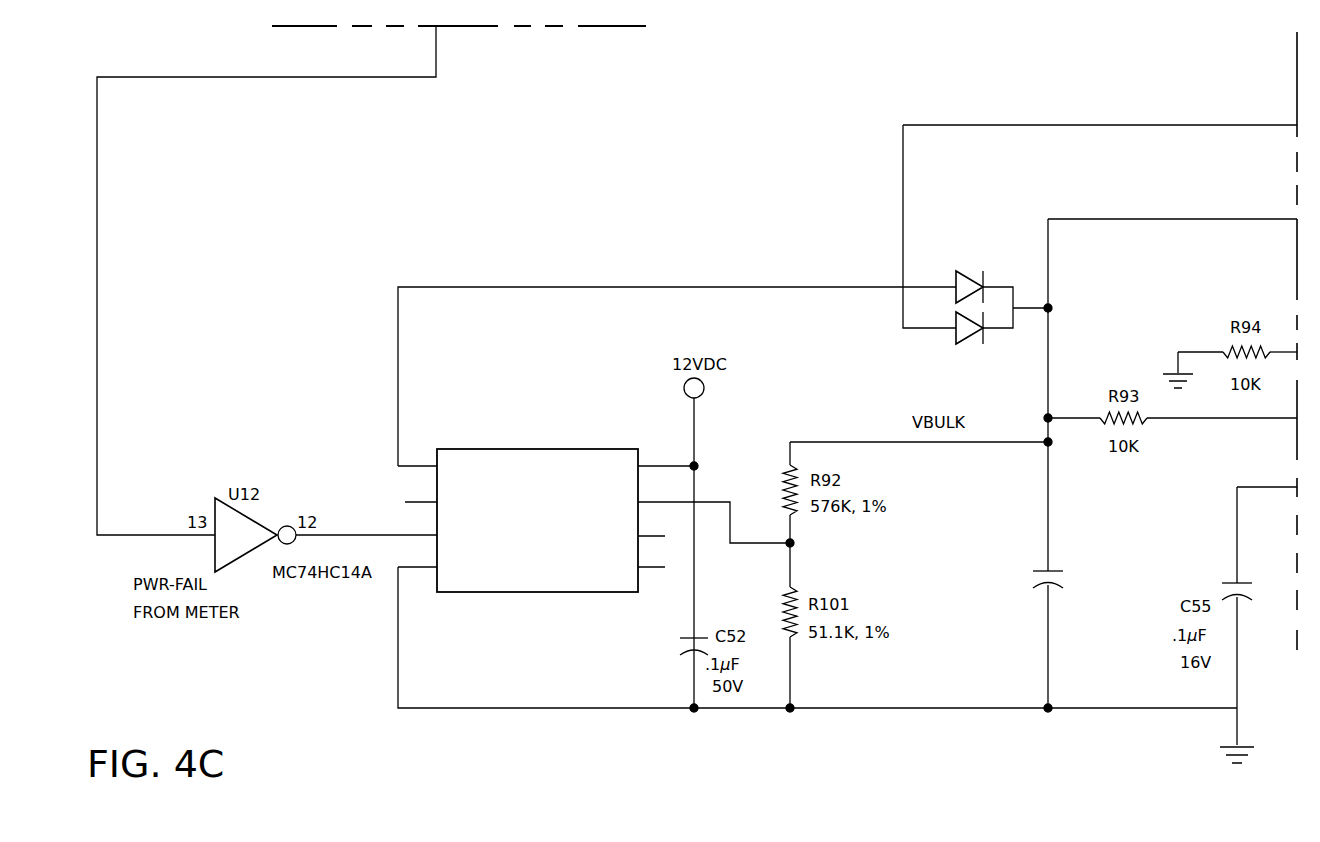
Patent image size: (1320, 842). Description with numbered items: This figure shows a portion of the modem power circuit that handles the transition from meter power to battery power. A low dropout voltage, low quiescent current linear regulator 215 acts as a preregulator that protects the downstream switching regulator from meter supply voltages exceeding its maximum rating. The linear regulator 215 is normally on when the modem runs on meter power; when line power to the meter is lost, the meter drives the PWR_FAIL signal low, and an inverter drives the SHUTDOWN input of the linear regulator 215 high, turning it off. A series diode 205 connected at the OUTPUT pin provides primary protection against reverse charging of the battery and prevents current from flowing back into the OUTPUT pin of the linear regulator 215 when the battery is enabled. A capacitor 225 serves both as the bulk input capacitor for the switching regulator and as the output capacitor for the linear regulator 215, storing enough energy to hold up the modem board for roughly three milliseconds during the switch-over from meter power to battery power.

The series diode 205 is at (1100, 253).
The linear regulator 215 is at (594, 536).
The capacitor 225 is at (1043, 639).